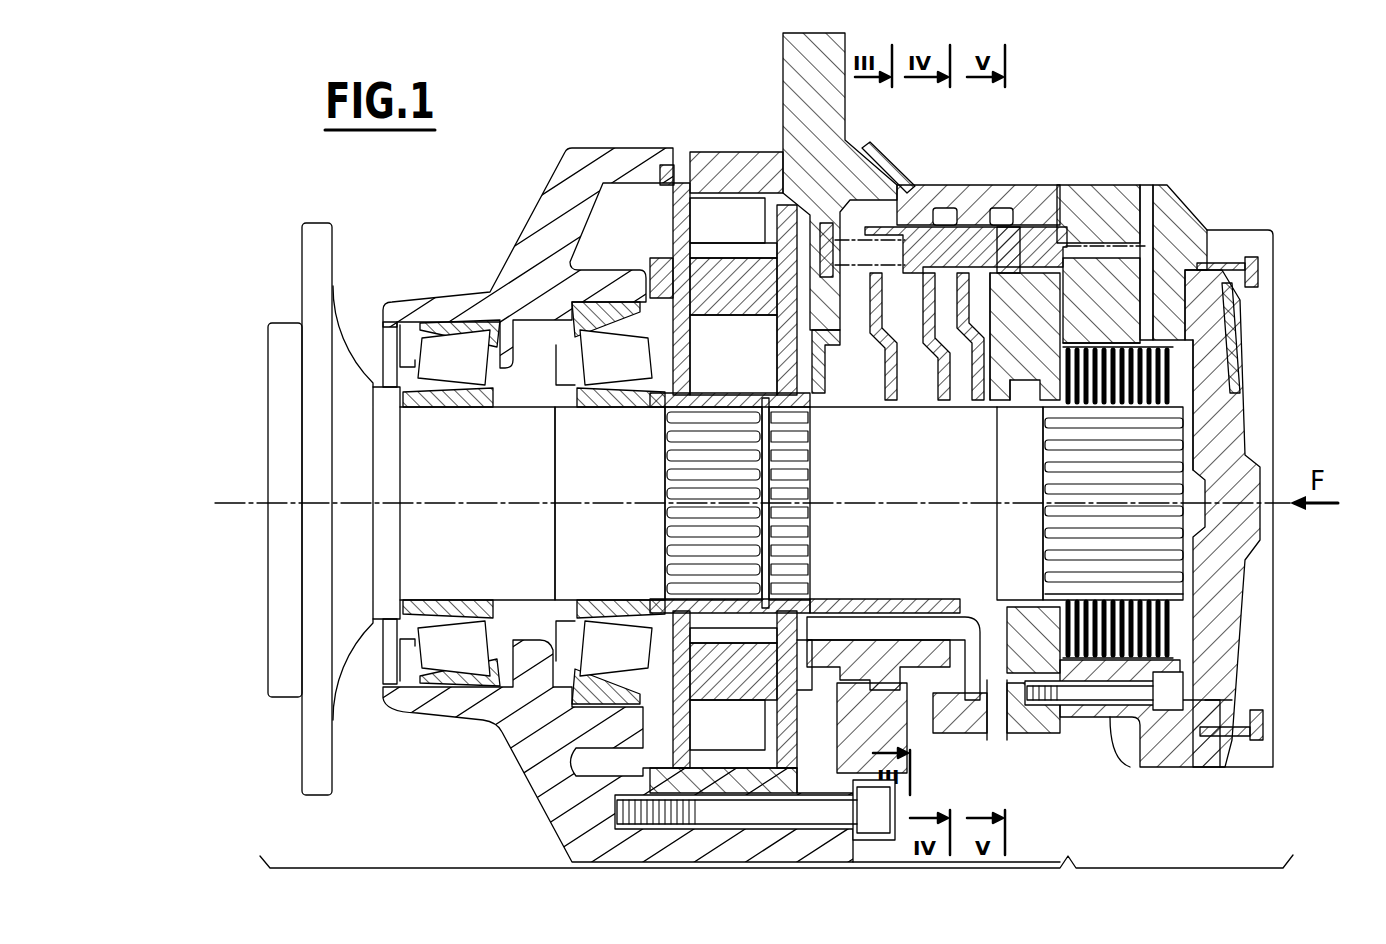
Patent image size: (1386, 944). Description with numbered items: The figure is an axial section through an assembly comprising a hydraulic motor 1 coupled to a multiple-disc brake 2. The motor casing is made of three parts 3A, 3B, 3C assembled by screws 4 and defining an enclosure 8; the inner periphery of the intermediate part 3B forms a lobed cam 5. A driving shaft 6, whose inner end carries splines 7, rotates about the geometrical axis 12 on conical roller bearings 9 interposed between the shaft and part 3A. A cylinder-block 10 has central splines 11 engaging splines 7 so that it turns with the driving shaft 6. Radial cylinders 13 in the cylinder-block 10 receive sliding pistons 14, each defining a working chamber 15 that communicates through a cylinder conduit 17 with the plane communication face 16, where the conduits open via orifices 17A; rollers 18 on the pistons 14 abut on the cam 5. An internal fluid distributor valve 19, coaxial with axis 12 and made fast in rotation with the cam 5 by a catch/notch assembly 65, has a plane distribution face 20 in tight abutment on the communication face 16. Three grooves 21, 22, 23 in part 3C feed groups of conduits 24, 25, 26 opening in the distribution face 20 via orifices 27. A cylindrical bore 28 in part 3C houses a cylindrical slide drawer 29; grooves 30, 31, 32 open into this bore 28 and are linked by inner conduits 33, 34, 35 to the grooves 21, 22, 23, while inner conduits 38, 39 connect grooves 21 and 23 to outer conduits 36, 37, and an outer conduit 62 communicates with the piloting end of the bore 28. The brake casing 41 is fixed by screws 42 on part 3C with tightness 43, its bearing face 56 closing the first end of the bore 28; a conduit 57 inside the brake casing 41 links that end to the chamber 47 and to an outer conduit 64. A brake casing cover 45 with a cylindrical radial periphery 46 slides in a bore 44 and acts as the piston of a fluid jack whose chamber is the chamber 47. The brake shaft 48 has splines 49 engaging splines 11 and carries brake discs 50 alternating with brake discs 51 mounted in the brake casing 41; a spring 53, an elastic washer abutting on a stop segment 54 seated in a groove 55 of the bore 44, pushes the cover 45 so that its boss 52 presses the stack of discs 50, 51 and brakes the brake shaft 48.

The hydraulic motor 1 is at (368, 868).
The multiple-disc brake 2 is at (1230, 866).
The casing part 3A is at (530, 252).
The intermediate casing part 3B is at (726, 152).
The casing part 3C is at (837, 167).
The screws 4 is at (592, 828).
The lobed cam 5 is at (672, 200).
The driving shaft 6 is at (460, 560).
The splines 7 is at (673, 508).
The enclosure 8 is at (532, 772).
The conical roller bearings 9 is at (607, 357).
The cylinder-block 10 is at (700, 258).
The central splines 11 is at (663, 435).
The geometrical axis 12 is at (228, 505).
The cylinders 13 is at (768, 332).
The pistons 14 is at (690, 294).
The working chamber 15 is at (750, 384).
The communication face 16 is at (839, 598).
The cylinder conduit 17 is at (783, 408).
The orifices 17A is at (867, 600).
The rollers 18 is at (720, 221).
The internal fluid distributor valve 19 is at (950, 598).
The distribution face 20 is at (768, 548).
The groove 21 is at (878, 402).
The groove 22 is at (930, 402).
The groove 23 is at (990, 410).
The conduits 24 is at (835, 385).
The conduits 25 is at (893, 395).
The conduits 26 is at (975, 402).
The orifices 27 is at (820, 632).
The cylindrical bore 28 is at (1081, 240).
The cylindrical slide drawer 29 is at (1053, 200).
The groove 30 is at (842, 222).
The groove 31 is at (950, 210).
The groove 32 is at (1005, 207).
The inner conduit 33 is at (875, 290).
The inner conduit 34 is at (992, 305).
The inner conduit 35 is at (995, 365).
The outer conduit 36 is at (918, 740).
The outer conduit 37 is at (1000, 755).
The inner conduit 38 is at (948, 730).
The inner conduit 39 is at (1022, 722).
The brake casing 41 is at (1165, 205).
The screws 42 is at (1110, 745).
The tightness 43 is at (1047, 348).
The bore 44 is at (1215, 700).
The brake casing cover 45 is at (1230, 550).
The radial periphery 46 is at (1228, 755).
The chamber 47 is at (1200, 455).
The brake shaft 48 is at (1033, 494).
The splines 49 is at (787, 480).
The brake discs 50 is at (1180, 368).
The brake discs 51 is at (1185, 387).
The boss 52 is at (1197, 583).
The spring 53 is at (1240, 312).
The stop segment 54 is at (1265, 722).
The groove 55 is at (1262, 272).
The bearing face 56 is at (1040, 310).
The conduit 57 is at (1170, 232).
The outer conduit 62 is at (897, 178).
The outer conduit 64 is at (1146, 185).
The catch/notch assembly 65 is at (812, 690).